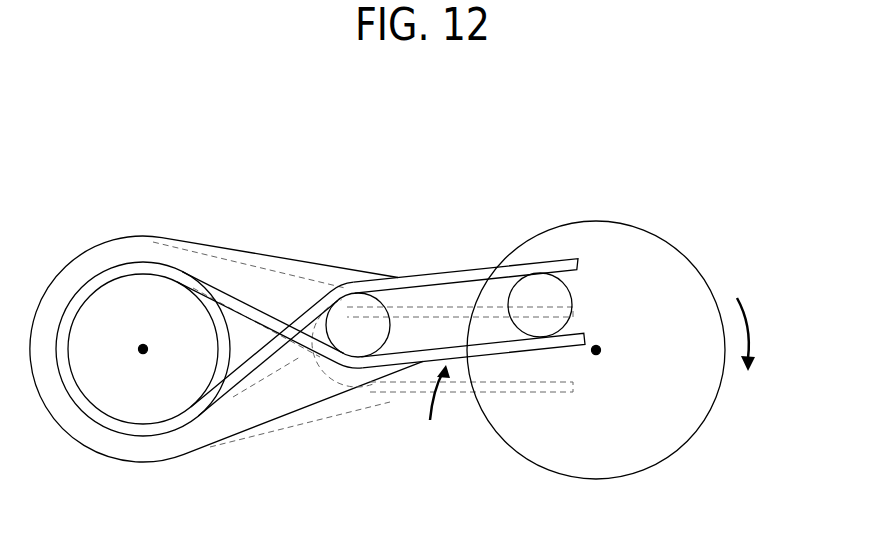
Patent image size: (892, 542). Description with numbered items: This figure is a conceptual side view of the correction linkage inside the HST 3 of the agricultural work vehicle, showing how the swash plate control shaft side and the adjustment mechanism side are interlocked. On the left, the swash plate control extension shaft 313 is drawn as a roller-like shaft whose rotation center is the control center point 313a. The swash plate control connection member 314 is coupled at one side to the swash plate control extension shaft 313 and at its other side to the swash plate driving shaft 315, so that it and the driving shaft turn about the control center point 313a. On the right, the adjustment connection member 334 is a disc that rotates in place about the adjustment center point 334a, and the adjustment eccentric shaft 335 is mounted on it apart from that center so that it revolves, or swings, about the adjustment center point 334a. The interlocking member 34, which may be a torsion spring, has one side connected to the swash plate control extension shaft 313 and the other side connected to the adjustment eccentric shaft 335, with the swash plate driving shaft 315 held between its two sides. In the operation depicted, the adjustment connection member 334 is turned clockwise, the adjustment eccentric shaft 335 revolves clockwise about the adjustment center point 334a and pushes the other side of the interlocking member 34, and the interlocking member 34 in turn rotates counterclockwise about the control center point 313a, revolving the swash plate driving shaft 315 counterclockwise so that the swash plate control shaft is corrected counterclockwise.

The HST 3 is at (50, 141).
The swash plate control extension shaft 313 is at (136, 298).
The control center point 313a is at (143, 349).
The swash plate control connection member 314 is at (253, 407).
The swash plate driving shaft 315 is at (360, 302).
The interlocking member 34 is at (493, 347).
The adjustment connection member 334 is at (612, 247).
The adjustment center point 334a is at (600, 350).
The adjustment eccentric shaft 335 is at (542, 297).